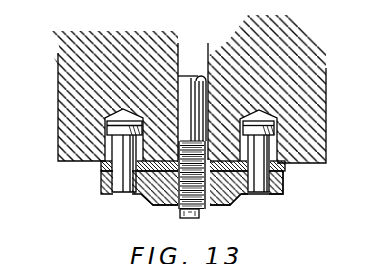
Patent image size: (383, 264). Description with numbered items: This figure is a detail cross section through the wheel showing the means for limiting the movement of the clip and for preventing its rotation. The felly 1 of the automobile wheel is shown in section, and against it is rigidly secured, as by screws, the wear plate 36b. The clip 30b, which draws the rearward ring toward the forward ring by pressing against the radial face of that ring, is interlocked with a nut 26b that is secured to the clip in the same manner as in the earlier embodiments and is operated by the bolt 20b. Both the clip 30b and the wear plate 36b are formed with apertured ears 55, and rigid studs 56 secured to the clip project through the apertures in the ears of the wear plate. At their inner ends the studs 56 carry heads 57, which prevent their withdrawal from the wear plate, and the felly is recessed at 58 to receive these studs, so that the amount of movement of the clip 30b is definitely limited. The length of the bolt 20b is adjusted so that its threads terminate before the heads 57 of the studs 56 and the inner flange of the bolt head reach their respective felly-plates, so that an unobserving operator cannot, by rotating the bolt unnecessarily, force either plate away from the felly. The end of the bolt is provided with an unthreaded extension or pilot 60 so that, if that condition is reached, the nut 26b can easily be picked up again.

The felly 1 is at (50, 121).
The bolt 20b is at (178, 67).
The nut 26b is at (205, 201).
The clip 30b is at (226, 196).
The wear plate 36b is at (280, 160).
The apertured ears 55 is at (276, 187).
The rigid studs 56 is at (113, 140).
The heads 57 is at (267, 116).
The recess 58 is at (262, 134).
The unthreaded extension or pilot 60 is at (172, 209).